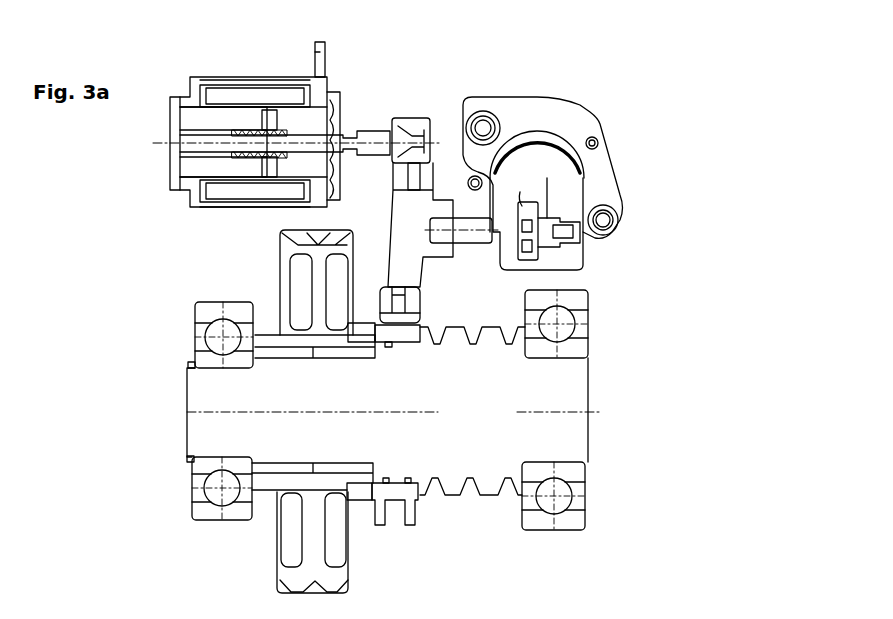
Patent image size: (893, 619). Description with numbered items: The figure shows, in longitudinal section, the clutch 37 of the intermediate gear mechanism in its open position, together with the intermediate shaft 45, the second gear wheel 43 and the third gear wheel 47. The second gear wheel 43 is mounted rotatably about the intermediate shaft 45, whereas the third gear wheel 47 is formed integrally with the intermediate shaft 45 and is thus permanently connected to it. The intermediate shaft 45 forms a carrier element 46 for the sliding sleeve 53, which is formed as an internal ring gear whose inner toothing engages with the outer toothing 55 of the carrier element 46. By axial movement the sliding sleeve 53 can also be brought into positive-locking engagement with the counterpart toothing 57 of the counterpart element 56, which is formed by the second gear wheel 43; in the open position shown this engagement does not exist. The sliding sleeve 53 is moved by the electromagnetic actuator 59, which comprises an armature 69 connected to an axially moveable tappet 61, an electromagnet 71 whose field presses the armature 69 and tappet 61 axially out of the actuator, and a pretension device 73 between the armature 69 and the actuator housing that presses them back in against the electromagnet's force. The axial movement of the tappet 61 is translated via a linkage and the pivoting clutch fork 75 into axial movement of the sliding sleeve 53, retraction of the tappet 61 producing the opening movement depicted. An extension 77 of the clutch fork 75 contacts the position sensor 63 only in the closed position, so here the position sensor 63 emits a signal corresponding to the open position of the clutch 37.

The clutch 37 is at (673, 168).
The second gear wheel 43 is at (277, 547).
The intermediate shaft 45 is at (183, 412).
The carrier element 46 is at (395, 362).
The third gear wheel 47 is at (457, 497).
The sliding sleeve 53 is at (410, 315).
The outer toothing 55 is at (398, 332).
The counterpart element 56 is at (362, 335).
The counterpart toothing 57 is at (355, 500).
The electromagnetic actuator 59 is at (175, 200).
The tappet 61 is at (320, 142).
The position sensor 63 is at (538, 163).
The armature 69 is at (193, 163).
The electromagnet 71 is at (250, 95).
The pretension device 73 is at (267, 153).
The clutch fork 75 is at (402, 240).
The extension 77 is at (468, 233).